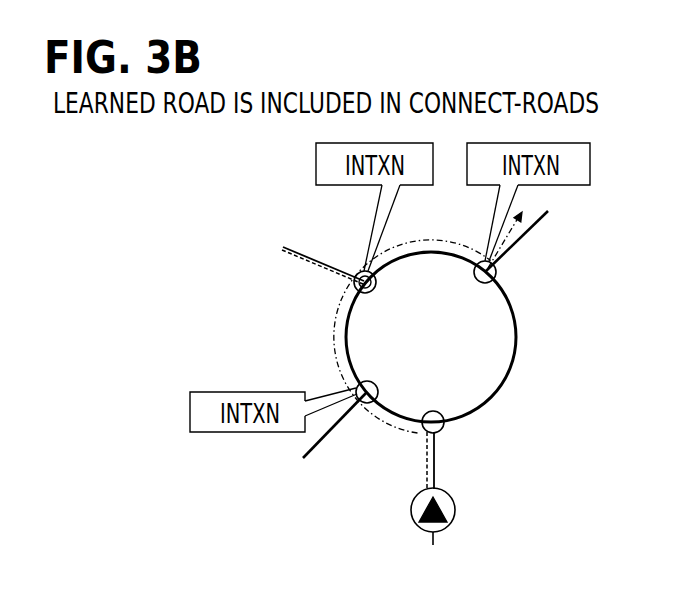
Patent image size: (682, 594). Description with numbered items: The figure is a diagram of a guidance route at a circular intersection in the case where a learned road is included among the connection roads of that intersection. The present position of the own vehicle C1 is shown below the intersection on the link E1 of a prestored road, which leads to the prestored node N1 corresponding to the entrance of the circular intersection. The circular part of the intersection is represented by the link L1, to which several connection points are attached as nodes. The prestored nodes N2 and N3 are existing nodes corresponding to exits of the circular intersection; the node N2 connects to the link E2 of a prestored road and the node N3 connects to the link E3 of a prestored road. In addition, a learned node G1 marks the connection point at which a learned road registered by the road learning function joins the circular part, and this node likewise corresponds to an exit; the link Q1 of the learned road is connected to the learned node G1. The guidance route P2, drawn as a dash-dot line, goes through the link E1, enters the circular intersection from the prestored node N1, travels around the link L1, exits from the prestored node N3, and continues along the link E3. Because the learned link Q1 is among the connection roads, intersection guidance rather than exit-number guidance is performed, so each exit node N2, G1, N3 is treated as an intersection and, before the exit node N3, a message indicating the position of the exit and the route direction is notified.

The link L1 is at (514, 380).
The guidance route P2 is at (333, 336).
The link of the learned road Q1 is at (332, 261).
The learned node G1 is at (378, 293).
The prestored node N1 is at (433, 409).
The prestored node N2 is at (374, 379).
The prestored node N3 is at (475, 288).
The link of the prestored road E1 is at (436, 458).
The link of the prestored road E2 is at (336, 430).
The link of the prestored road E3 is at (517, 250).
The present position of the own vehicle C1 is at (410, 512).